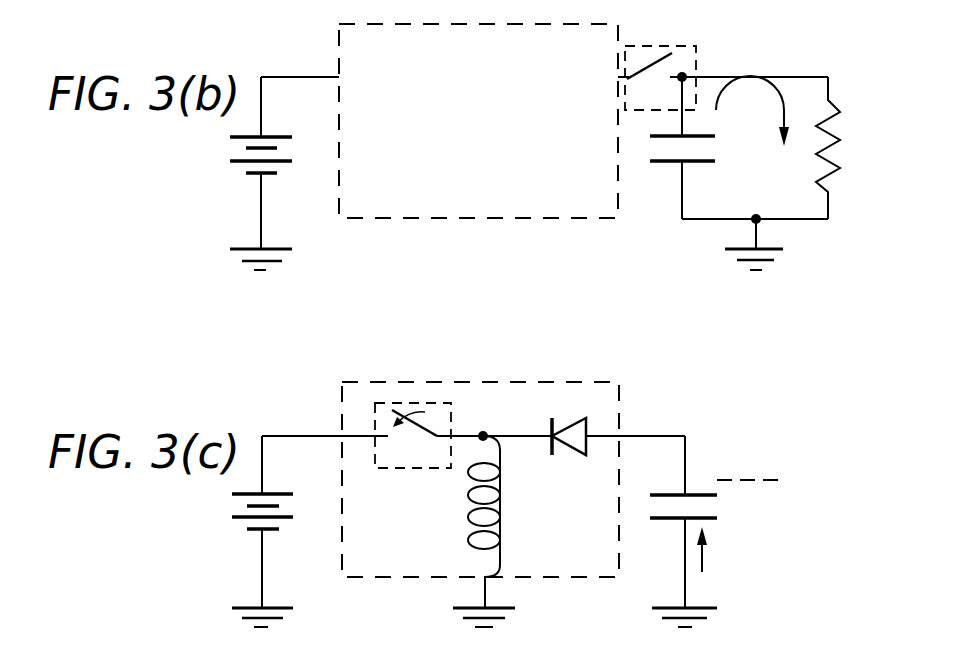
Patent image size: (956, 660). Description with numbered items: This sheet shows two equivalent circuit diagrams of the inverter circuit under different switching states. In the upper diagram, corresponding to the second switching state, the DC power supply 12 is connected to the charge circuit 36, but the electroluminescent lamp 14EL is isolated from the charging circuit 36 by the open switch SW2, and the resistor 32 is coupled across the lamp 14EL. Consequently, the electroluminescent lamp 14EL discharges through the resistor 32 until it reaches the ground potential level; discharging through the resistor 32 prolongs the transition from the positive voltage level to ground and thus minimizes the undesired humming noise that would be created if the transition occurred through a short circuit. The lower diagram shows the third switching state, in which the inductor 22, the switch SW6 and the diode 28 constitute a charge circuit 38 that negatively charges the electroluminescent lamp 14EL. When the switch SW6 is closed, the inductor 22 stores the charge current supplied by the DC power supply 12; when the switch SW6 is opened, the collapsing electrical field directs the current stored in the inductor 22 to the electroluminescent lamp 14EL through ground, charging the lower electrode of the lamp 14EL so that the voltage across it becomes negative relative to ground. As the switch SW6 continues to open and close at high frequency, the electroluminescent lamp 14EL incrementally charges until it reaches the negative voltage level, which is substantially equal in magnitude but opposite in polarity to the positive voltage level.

In FIG. 3B, the DC power supply 12 is at (237, 163).
In FIG. 3C, the DC power supply 12 is at (240, 520).
In FIG. 3B, the charge circuit 36 is at (470, 218).
In FIG. 3B, the switch SW2 is at (668, 44).
In FIG. 3B, the electroluminescent lamp 14EL is at (716, 149).
In FIG. 3C, the electroluminescent lamp 14EL is at (719, 509).
In FIG. 3B, the resistor 32 is at (838, 145).
In FIG. 3C, the charge circuit 38 is at (407, 577).
In FIG. 3C, the switch SW6 is at (405, 468).
In FIG. 3C, the inductor 22 is at (502, 511).
In FIG. 3C, the diode 28 is at (572, 455).